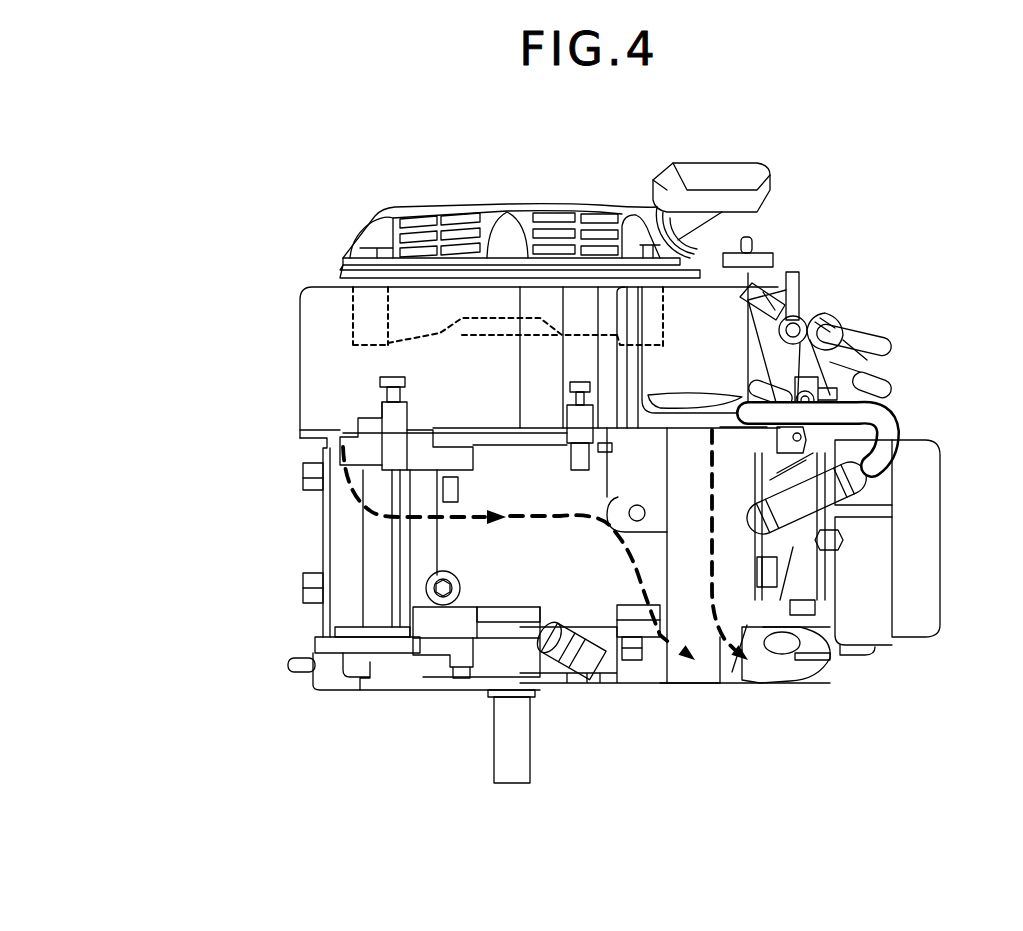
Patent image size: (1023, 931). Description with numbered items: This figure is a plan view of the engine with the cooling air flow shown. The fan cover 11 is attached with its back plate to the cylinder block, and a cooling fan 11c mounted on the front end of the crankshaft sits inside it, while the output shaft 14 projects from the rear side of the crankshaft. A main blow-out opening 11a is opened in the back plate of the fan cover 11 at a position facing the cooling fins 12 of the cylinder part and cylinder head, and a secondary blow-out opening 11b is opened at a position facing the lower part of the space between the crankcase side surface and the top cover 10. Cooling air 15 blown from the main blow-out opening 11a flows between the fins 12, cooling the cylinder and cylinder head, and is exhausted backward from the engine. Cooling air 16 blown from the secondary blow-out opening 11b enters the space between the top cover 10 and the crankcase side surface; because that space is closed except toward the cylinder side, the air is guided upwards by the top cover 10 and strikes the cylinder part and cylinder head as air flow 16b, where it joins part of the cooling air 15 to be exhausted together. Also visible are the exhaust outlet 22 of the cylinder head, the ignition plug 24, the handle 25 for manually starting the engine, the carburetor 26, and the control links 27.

The top cover 10 is at (493, 550).
The fan cover 11 is at (703, 323).
The main blow-out opening 11a is at (697, 420).
The secondary blow-out opening 11b is at (342, 445).
The cooling fan 11c is at (372, 332).
The cooling fins 12 is at (893, 412).
The output shaft 14 is at (508, 770).
The cooling air 15 is at (722, 692).
The cooling air 16 is at (487, 507).
The air flow 16b is at (660, 686).
The exhaust outlet 22 is at (778, 648).
The ignition plug 24 is at (870, 503).
The handle 25 is at (712, 168).
The carburetor 26 is at (803, 313).
The control links 27 is at (808, 304).